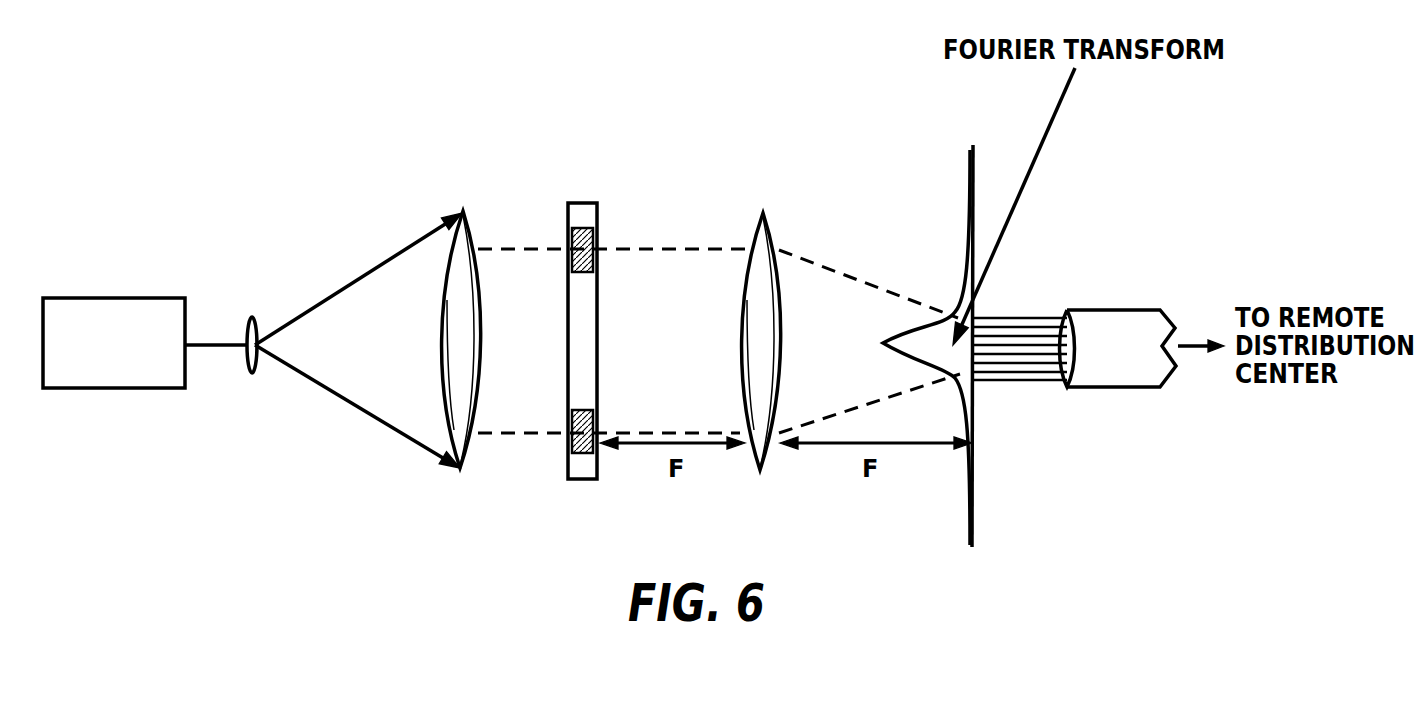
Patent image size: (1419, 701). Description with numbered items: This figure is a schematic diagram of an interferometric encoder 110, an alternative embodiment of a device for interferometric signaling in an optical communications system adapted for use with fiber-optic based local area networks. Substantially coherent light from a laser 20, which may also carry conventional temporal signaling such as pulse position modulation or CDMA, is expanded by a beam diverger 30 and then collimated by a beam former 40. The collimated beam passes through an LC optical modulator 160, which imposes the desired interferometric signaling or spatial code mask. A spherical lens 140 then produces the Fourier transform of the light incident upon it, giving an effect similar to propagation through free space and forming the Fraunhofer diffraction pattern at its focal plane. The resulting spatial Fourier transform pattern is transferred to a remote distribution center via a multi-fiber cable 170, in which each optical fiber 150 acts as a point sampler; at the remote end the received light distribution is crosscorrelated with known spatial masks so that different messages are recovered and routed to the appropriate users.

The interferometric encoder 110 is at (238, 112).
The laser 20 is at (130, 298).
The beam diverger 30 is at (262, 318).
The beam former 40 is at (462, 462).
The LC optical modulator 160 is at (585, 203).
The spherical lens 140 is at (760, 462).
The optical fiber 150 is at (1030, 320).
The multi-fiber cable 170 is at (1110, 310).